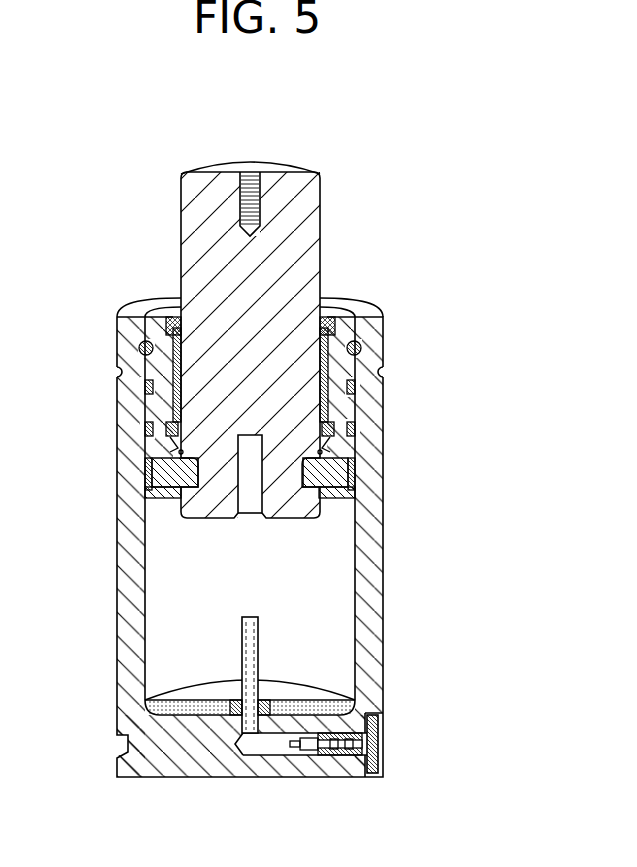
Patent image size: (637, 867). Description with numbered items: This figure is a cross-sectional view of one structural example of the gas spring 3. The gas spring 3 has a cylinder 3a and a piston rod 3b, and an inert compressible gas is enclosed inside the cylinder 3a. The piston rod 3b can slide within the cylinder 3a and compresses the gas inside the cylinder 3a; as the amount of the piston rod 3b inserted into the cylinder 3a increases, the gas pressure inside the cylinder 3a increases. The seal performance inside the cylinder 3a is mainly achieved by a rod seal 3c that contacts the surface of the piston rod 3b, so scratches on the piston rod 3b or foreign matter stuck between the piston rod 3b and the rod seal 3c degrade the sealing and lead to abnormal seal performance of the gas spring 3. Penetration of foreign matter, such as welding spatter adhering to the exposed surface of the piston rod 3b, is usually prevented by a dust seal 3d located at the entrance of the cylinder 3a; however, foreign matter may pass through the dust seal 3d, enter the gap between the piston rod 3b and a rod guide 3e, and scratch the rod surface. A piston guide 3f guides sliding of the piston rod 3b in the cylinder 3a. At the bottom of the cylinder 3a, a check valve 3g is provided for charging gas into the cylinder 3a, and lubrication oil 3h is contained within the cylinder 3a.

The gas spring 3 is at (99, 162).
The cylinder 3a is at (373, 620).
The piston rod 3b is at (290, 215).
The rod seal 3c is at (173, 417).
The dust seal 3d is at (175, 326).
The rod guide 3e is at (323, 373).
The piston guide 3f is at (357, 472).
The check valve 3g is at (342, 748).
The lubrication oil 3h is at (185, 692).